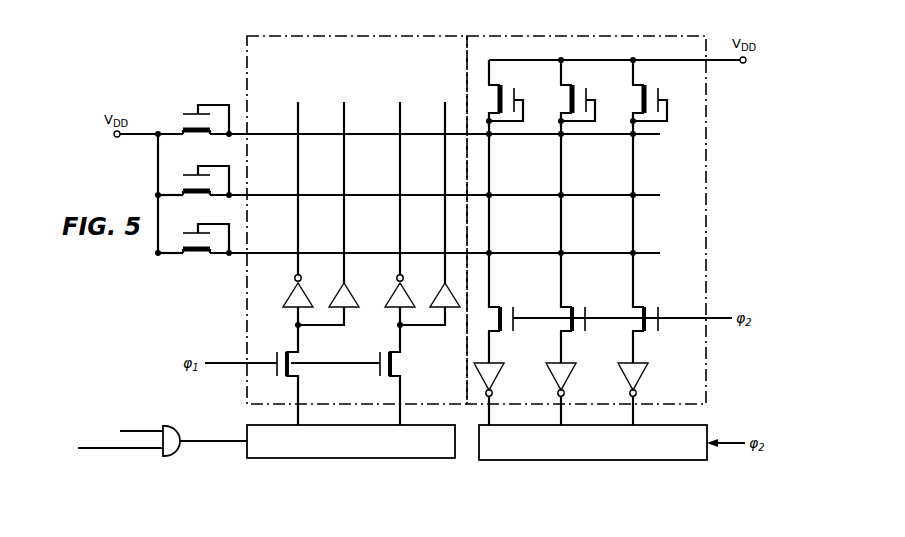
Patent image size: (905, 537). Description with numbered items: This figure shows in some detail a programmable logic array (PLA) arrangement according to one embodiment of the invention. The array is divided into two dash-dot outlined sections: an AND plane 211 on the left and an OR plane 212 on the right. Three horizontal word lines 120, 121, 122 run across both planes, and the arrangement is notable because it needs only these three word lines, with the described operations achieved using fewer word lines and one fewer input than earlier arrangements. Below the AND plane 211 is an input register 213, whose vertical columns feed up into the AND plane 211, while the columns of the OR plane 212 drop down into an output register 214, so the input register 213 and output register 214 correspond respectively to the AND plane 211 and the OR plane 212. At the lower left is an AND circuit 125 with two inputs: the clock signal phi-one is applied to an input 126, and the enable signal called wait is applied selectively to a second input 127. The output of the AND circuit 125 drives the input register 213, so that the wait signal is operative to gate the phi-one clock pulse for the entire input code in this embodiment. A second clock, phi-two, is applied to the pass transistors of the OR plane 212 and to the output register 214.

The word line 120 is at (450, 134).
The word line 121 is at (450, 195).
The word line 122 is at (450, 253).
The AND circuit 125 is at (203, 450).
The input 126 is at (148, 431).
The second input 127 is at (105, 449).
The AND plane 211 is at (248, 57).
The OR plane 212 is at (695, 162).
The input register 213 is at (420, 445).
The output register 214 is at (508, 440).